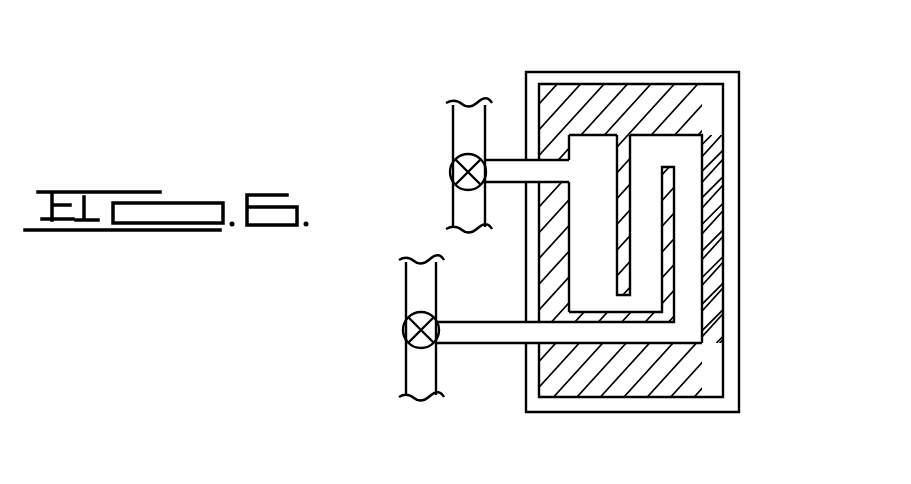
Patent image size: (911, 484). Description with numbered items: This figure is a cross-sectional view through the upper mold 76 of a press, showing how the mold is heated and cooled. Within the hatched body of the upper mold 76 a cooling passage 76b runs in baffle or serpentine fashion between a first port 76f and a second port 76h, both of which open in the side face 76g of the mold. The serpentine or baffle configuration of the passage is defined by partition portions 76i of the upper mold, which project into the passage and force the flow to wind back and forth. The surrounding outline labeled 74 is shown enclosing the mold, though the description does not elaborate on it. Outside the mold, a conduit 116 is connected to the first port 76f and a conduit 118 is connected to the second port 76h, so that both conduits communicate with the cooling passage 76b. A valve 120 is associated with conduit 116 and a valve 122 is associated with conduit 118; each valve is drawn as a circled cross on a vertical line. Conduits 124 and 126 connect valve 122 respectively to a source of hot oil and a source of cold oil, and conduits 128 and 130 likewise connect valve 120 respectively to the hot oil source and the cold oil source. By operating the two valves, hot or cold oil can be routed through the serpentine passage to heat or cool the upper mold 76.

The housing 74 is at (740, 333).
The upper mold 76 is at (737, 282).
The cooling passage 76b is at (688, 170).
The first port 76f is at (560, 343).
The side face 76g is at (545, 252).
The second port 76h is at (557, 180).
The partition portions 76i is at (613, 172).
The conduit 116 is at (478, 333).
The conduit 118 is at (500, 163).
The valve 120 is at (403, 330).
The valve 122 is at (449, 170).
The conduit 124 is at (457, 127).
The conduit 126 is at (458, 212).
The conduit 128 is at (418, 273).
The conduit 130 is at (410, 375).